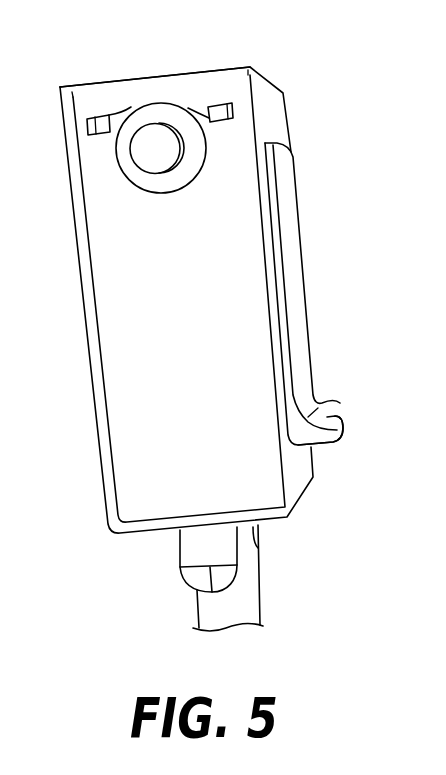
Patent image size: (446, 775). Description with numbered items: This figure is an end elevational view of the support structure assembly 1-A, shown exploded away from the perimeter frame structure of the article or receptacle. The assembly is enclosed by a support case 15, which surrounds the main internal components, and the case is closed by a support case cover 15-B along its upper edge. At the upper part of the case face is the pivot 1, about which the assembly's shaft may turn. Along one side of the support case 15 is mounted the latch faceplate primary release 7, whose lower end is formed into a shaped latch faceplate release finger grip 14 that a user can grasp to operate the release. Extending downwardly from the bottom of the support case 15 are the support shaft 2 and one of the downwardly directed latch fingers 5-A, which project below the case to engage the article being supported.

The support case 15 is at (110, 310).
The support case cover 15-B is at (152, 77).
The pivot 1 is at (145, 151).
The latch faceplate primary release 7 is at (288, 185).
The support structure assembly 1-A is at (250, 268).
The latch faceplate release finger grip 14 is at (343, 413).
The latch fingers 5-A is at (190, 552).
The support shaft 2 is at (248, 597).